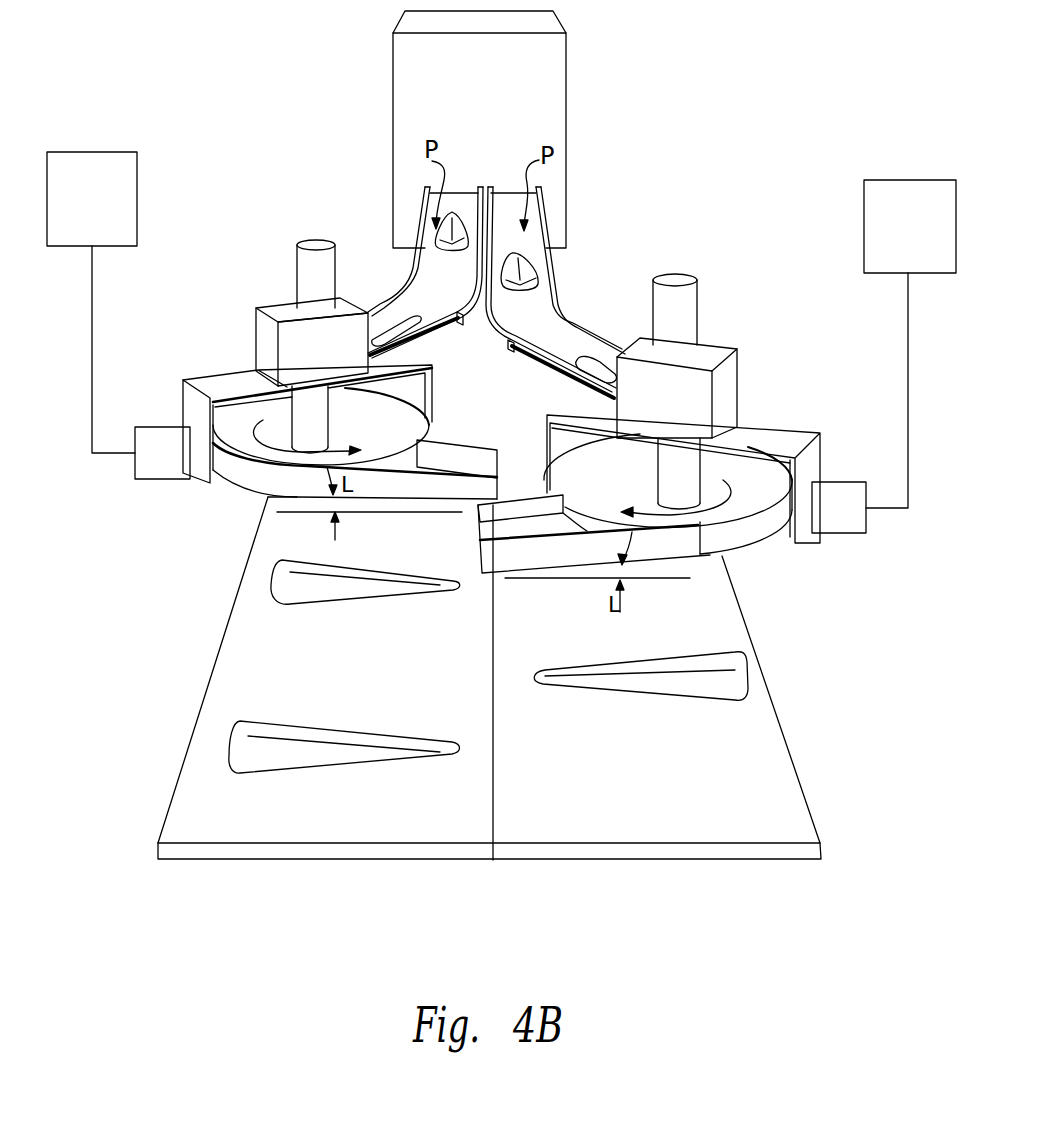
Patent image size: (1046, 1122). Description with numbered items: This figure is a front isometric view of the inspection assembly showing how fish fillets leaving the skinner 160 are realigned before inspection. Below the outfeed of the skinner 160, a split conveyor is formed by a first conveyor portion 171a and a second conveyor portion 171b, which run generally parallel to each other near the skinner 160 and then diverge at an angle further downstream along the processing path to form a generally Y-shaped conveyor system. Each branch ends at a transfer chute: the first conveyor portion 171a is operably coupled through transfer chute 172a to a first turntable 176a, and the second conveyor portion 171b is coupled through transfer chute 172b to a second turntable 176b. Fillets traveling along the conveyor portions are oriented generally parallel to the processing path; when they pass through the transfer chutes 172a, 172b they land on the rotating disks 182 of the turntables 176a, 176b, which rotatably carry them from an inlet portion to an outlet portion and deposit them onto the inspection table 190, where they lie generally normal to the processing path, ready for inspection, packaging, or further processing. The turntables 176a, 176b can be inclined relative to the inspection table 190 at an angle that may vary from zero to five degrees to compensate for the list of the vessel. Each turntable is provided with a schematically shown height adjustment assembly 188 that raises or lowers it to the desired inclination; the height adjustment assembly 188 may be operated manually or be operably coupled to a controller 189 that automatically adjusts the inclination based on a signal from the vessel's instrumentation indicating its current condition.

The skinner 160 is at (503, 119).
The first conveyor portion 171a is at (560, 292).
The second conveyor portion 171b is at (413, 268).
The transfer chute 172a is at (552, 392).
The transfer chute 172b is at (426, 353).
The first turntable 176a is at (770, 372).
The second turntable 176b is at (243, 322).
The rotating disk 182 is at (237, 423).
The height adjustment assembly 188 is at (163, 480).
The controller 189 is at (111, 215).
The inspection table 190 is at (775, 757).